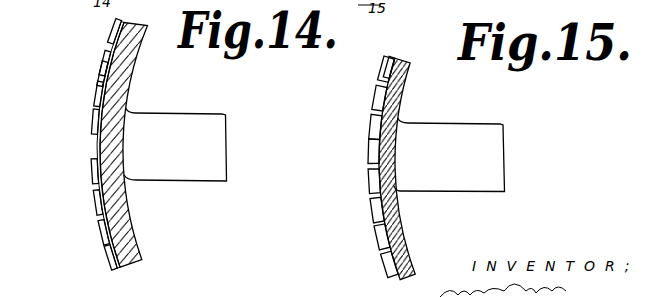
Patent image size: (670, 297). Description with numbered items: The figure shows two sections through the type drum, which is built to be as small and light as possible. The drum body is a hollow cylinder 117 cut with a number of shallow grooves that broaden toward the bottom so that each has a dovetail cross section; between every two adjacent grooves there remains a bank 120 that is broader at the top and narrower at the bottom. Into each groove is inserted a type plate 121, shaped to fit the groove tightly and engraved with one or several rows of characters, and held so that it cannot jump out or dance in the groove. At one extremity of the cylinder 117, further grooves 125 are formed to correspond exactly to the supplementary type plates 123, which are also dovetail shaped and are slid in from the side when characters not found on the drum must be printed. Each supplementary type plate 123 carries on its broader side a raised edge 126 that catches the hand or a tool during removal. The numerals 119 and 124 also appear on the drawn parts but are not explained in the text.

In FIG. 15, the hollow cylinder 117 is at (401, 99).
In FIG. 14, the blocks 119 is at (110, 62).
In FIG. 14, the bank 120 is at (107, 73).
In FIG. 14, the type plate 121 is at (122, 46).
In FIG. 15, the supplementary type plate 123 is at (372, 127).
In FIG. 15, the blocks 124 is at (375, 170).
In FIG. 15, the grooves 125 is at (396, 153).
In FIG. 15, the raised edge 126 is at (370, 152).